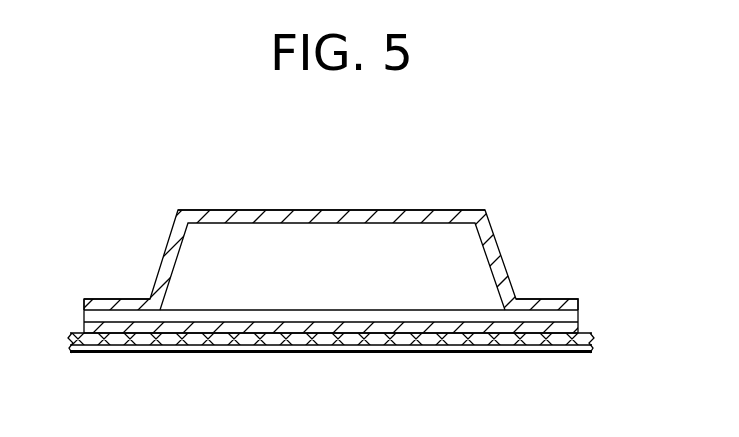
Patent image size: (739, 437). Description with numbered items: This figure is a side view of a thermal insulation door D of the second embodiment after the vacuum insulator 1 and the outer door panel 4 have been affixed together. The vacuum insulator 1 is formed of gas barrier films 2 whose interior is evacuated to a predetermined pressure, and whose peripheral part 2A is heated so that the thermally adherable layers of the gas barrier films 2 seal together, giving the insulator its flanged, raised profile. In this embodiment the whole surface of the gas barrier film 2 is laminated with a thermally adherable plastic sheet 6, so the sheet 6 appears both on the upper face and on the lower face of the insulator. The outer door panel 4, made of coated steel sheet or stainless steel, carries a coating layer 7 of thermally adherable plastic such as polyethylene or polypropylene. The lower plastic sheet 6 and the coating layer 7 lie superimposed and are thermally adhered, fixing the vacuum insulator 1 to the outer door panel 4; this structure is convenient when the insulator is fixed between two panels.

The thermal insulation door D is at (428, 188).
The vacuum insulator 1 is at (320, 222).
The gas barrier film 2 is at (258, 238).
The peripheral part of gas barrier films 2A is at (122, 309).
The outer door panel 4 is at (383, 352).
The thermally adherable plastic sheet 6 is at (380, 212).
The coating layer 7 is at (493, 338).